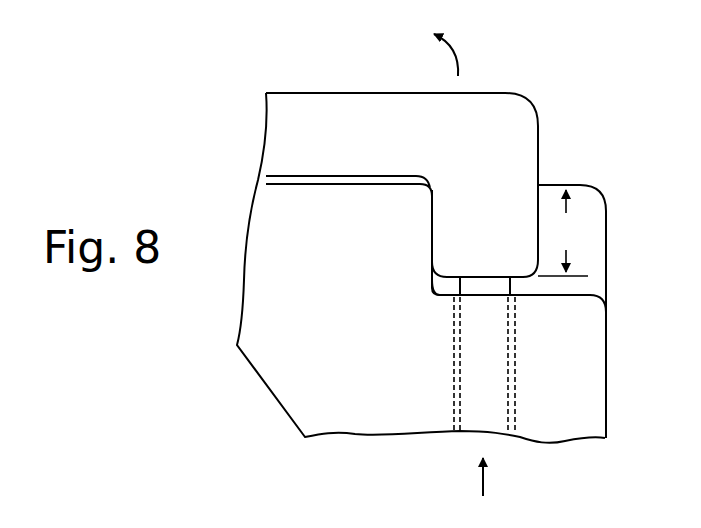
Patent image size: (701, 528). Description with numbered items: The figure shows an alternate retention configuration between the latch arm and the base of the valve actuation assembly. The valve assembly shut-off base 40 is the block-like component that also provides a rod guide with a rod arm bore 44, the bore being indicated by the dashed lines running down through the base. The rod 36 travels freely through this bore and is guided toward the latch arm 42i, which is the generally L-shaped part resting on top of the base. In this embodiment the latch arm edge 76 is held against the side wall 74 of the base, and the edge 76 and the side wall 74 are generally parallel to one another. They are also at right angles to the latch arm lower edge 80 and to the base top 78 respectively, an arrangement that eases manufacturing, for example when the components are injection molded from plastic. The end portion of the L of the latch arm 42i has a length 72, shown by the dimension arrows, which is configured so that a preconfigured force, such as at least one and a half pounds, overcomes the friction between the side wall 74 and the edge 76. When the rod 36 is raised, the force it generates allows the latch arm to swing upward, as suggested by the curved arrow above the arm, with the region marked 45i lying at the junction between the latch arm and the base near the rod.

The valve assembly shut-off base 40 is at (303, 272).
The latch arm 42i is at (520, 150).
The rod 36 is at (445, 293).
The rod arm bore 44 is at (515, 372).
The base top 78 is at (344, 188).
The latch arm lower edge 80 is at (364, 175).
The latch arm edge 76 is at (432, 188).
The side wall 74 is at (432, 242).
The corner region 45i is at (432, 272).
The length 72 is at (563, 233).